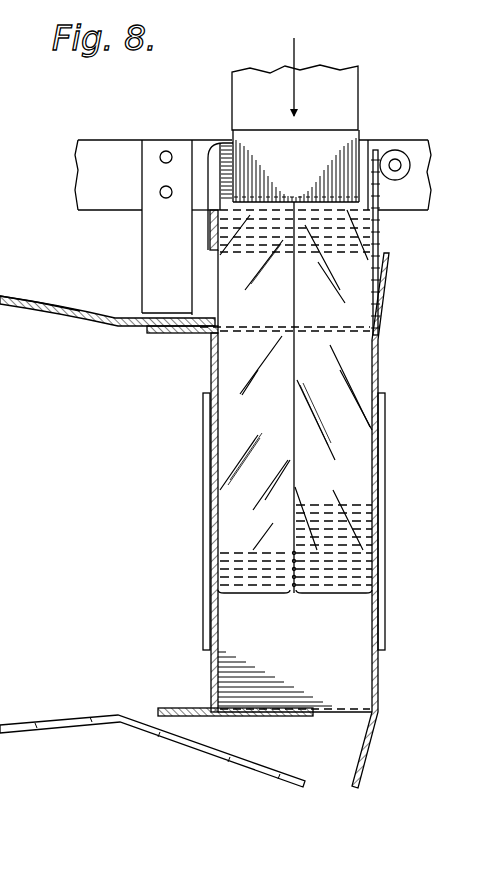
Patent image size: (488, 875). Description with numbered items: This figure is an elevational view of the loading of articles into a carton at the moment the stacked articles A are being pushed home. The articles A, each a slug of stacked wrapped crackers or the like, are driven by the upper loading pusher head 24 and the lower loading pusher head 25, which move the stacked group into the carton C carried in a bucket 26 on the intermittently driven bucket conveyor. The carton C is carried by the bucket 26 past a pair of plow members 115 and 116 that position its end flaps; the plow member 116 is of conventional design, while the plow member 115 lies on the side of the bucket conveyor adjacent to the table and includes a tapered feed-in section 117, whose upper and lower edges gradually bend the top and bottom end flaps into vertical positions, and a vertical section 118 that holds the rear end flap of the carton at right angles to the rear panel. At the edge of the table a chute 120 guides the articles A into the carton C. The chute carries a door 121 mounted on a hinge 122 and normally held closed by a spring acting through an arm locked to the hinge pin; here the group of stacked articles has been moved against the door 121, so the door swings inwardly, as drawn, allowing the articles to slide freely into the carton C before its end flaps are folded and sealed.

The upper loading pusher head 24 is at (323, 329).
The lower loading pusher head 25 is at (300, 175).
The bucket 26 is at (207, 512).
The plow member 115 is at (73, 301).
The plow member 116 is at (115, 726).
The feed-in section 117 is at (46, 318).
The vertical section 118 is at (185, 328).
The chute 120 is at (380, 268).
The door 121 is at (375, 237).
The hinge 122 is at (397, 151).
The article A is at (242, 371).
The carton C is at (376, 346).